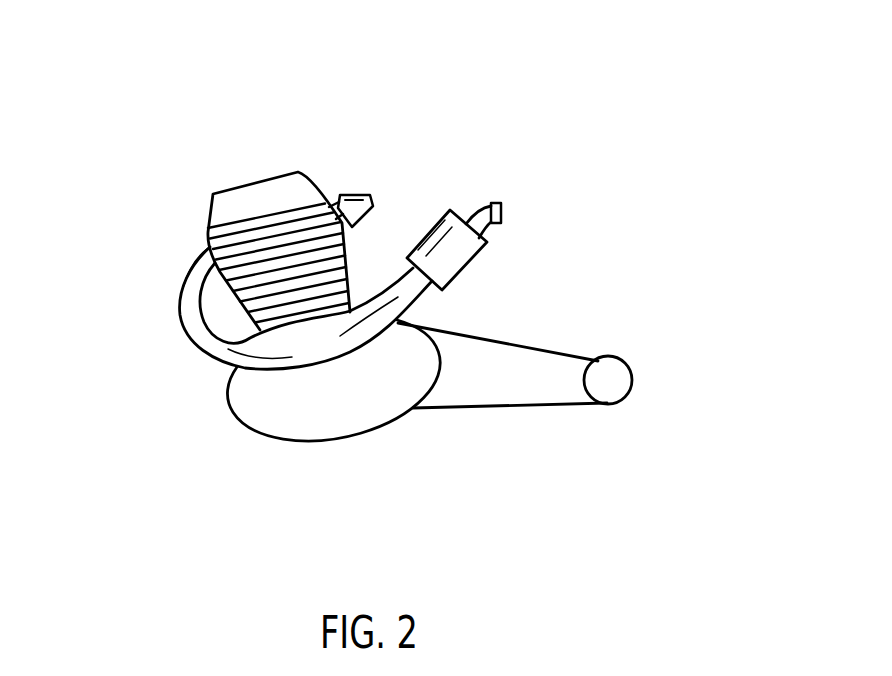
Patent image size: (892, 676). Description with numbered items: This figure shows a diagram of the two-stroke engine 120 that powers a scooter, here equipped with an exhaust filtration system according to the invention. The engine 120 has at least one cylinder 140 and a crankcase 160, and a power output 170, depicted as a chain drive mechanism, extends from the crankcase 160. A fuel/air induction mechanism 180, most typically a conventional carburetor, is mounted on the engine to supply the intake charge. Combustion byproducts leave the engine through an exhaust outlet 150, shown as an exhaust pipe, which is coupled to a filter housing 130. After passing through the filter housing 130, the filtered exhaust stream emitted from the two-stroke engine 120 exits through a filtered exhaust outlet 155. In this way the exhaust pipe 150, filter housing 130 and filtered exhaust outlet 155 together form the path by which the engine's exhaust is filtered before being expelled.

The two-stroke engine 120 is at (620, 78).
The filter housing 130 is at (481, 250).
The cylinder 140 is at (240, 180).
The exhaust outlet 150 is at (187, 327).
The filtered exhaust outlet 155 is at (501, 210).
The crankcase 160 is at (343, 435).
The power output 170 is at (626, 360).
The fuel/air induction mechanism 180 is at (362, 195).